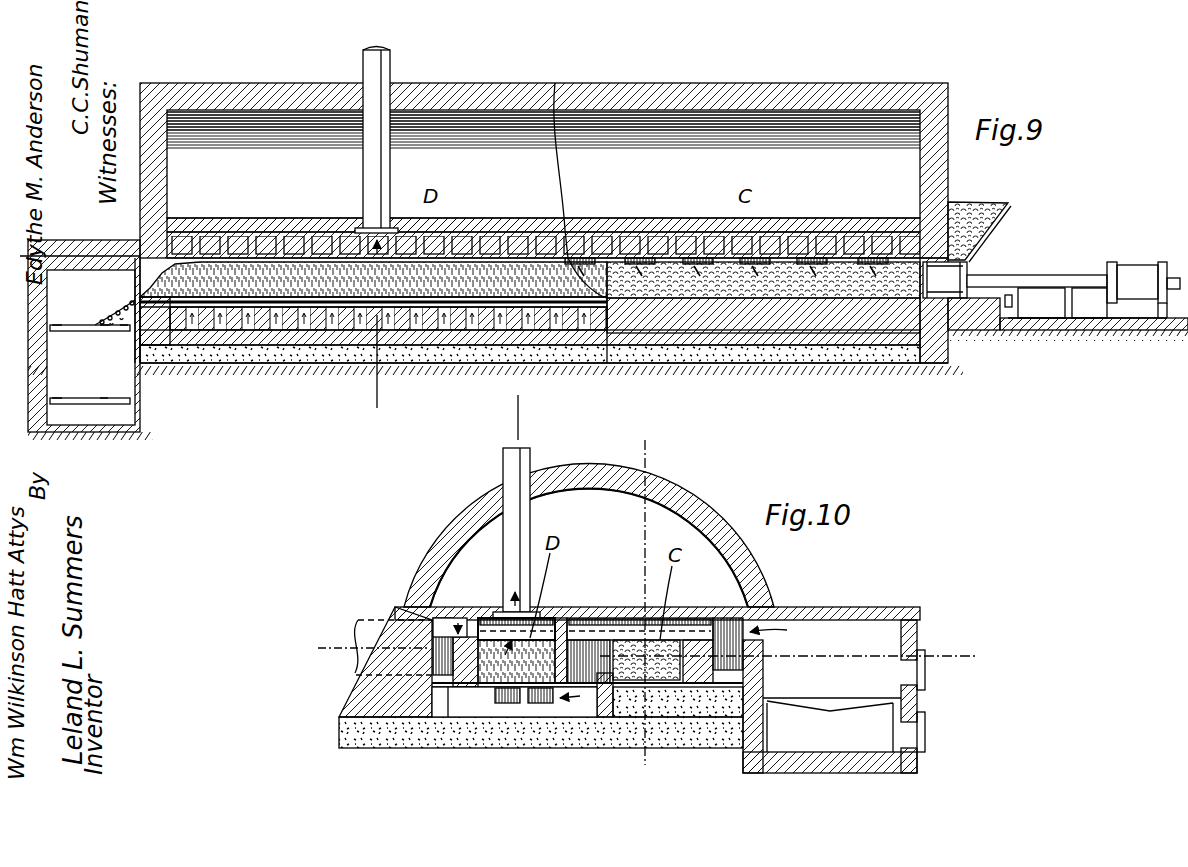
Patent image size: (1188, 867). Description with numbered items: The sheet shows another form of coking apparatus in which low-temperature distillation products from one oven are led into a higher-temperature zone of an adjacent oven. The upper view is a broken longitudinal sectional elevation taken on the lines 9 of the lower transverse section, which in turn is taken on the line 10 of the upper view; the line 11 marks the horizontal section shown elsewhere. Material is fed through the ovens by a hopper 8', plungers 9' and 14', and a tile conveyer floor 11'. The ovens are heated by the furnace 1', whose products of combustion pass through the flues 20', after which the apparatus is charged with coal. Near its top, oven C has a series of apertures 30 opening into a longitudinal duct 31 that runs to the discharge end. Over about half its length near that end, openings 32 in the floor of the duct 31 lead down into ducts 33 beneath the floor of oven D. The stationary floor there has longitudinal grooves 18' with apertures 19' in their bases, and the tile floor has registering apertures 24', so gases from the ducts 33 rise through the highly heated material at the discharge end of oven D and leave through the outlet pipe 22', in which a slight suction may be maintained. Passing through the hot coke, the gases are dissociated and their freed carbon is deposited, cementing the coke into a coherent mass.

In FIG. 9, the outlet pipe 22' is at (404, 143).
In FIG. 10, the outlet pipe 22' is at (546, 520).
In FIG. 9, the flues 20' is at (543, 222).
In FIG. 10, the flues 20' is at (655, 619).
In FIG. 9, the apertures 30 is at (630, 262).
In FIG. 10, the apertures 30 is at (606, 618).
In FIG. 9, the hopper 8' is at (993, 230).
In FIG. 9, the plunger 9' is at (1051, 267).
In FIG. 9, the plunger 14' is at (1068, 341).
In FIG. 9, the tile conveyer floor 11' is at (518, 250).
In FIG. 9, the section line 10 is at (400, 391).
In FIG. 9, the apertures 19' is at (530, 398).
In FIG. 9, the longitudinal grooves 18' is at (373, 379).
In FIG. 9, the registering apertures 24' is at (373, 372).
In FIG. 9, the ducts 33 is at (332, 320).
In FIG. 10, the ducts 33 is at (515, 712).
In FIG. 9, the section lines 9 is at (529, 417).
In FIG. 10, the section lines 9 is at (659, 600).
In FIG. 10, the longitudinal duct 31 is at (583, 640).
In FIG. 10, the openings 32 is at (587, 690).
In FIG. 10, the furnace 1' is at (834, 696).
In FIG. 10, the section line 11 is at (639, 634).